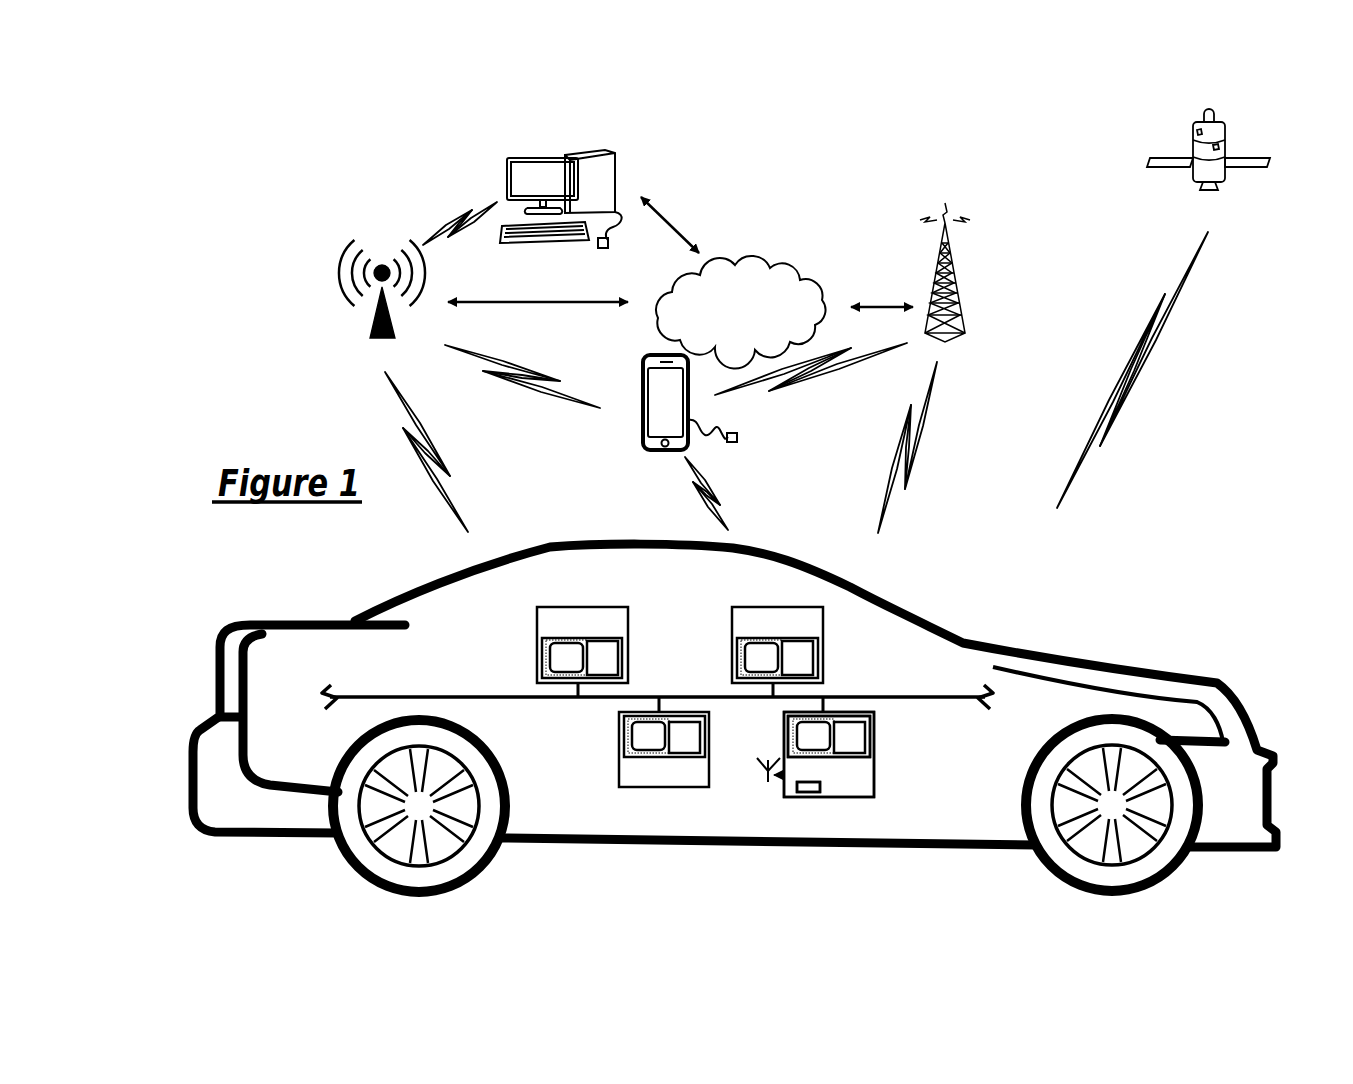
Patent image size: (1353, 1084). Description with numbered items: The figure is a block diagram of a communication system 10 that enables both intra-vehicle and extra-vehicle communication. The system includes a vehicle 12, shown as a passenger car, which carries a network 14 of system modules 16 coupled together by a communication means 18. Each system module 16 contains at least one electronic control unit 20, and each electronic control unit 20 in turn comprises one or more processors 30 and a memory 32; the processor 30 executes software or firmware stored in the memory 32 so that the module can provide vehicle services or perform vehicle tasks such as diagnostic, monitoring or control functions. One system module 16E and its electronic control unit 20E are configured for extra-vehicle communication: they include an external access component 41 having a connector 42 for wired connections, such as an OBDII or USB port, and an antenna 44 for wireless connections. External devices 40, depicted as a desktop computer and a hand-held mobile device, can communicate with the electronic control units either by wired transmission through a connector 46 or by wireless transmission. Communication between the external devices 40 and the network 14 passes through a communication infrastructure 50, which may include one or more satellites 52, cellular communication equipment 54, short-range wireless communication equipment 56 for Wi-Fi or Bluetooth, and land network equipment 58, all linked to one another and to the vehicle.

The communication system 10 is at (1150, 530).
The vehicle 12 is at (1110, 657).
The network 14 is at (607, 800).
The system module 16 is at (632, 614).
The system module configured for extra-vehicle communication 16E is at (817, 797).
The communication means 18 is at (889, 697).
The electronic control unit 20 is at (623, 657).
The electronic control unit configured for extra-vehicle communication 20E is at (867, 758).
The processor 30 is at (550, 658).
The memory 32 is at (726, 697).
The external device 40 is at (478, 150).
The external access component 41 is at (823, 789).
The connector 42 is at (792, 797).
The antenna 44 is at (768, 782).
The connector 46 is at (608, 248).
The communication infrastructure 50 is at (840, 152).
The satellite 52 is at (1237, 147).
The cellular communication equipment 54 is at (958, 292).
The short-range wireless communication equipment 56 is at (394, 333).
The land network equipment 58 is at (740, 312).